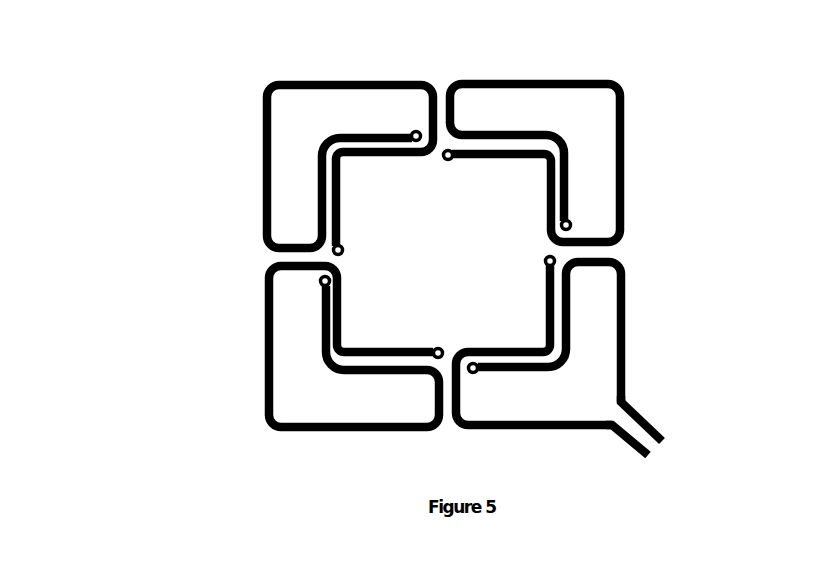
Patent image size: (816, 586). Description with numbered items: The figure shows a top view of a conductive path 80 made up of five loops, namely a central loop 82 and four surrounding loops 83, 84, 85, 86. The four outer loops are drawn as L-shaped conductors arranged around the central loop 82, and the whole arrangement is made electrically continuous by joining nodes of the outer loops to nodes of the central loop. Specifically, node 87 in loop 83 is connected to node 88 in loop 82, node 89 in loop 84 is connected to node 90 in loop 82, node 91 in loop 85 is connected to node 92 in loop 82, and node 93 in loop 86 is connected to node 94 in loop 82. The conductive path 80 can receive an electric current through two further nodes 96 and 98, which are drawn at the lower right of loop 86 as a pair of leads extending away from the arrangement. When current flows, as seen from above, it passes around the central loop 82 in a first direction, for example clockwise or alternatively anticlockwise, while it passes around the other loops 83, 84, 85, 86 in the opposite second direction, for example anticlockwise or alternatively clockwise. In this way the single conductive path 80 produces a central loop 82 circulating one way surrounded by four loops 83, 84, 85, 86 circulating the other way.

The conductive path 80 is at (177, 268).
The loop 82 is at (512, 207).
The loop 83 is at (290, 342).
The loop 84 is at (292, 133).
The loop 85 is at (590, 163).
The loop 86 is at (592, 343).
The node 87 is at (320, 283).
The node 88 is at (345, 250).
The node 89 is at (416, 131).
The node 90 is at (448, 162).
The node 91 is at (572, 224).
The node 92 is at (546, 261).
The node 93 is at (477, 372).
The node 94 is at (439, 349).
The node 96 is at (649, 456).
The node 98 is at (664, 441).